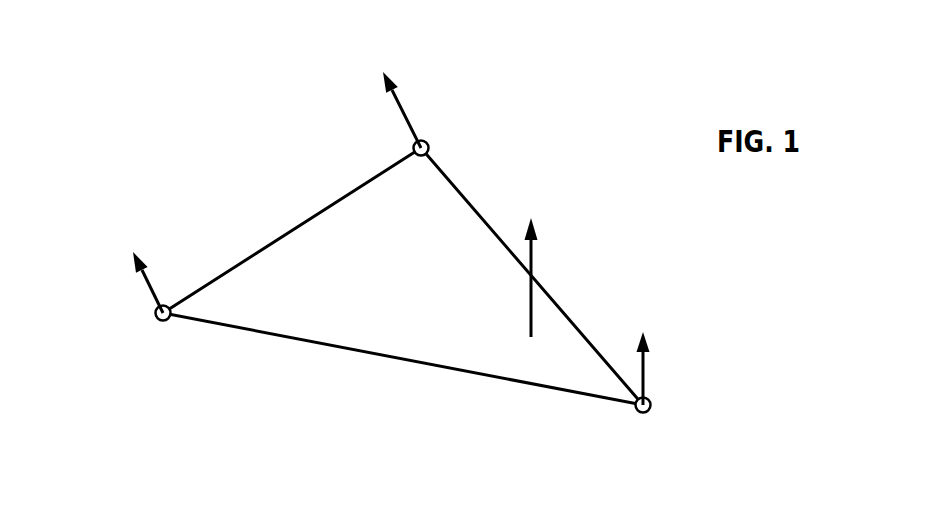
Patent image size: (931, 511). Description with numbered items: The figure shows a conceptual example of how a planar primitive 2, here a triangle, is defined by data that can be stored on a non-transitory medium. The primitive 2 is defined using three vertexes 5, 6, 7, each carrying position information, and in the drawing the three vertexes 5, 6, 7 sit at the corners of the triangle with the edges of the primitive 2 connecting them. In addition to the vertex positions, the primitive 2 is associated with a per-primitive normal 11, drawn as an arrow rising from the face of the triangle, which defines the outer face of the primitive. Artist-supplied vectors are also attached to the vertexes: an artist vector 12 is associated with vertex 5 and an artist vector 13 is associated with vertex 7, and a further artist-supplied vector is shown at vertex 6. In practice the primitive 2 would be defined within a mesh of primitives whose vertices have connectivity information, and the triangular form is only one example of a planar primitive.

The planar primitive 2 is at (403, 292).
The vertex 5 is at (133, 265).
The vertex 6 is at (413, 147).
The vertex 7 is at (593, 430).
The per-primitive normal 11 is at (451, 174).
The artist vector 12 is at (94, 327).
The artist vector 13 is at (715, 386).